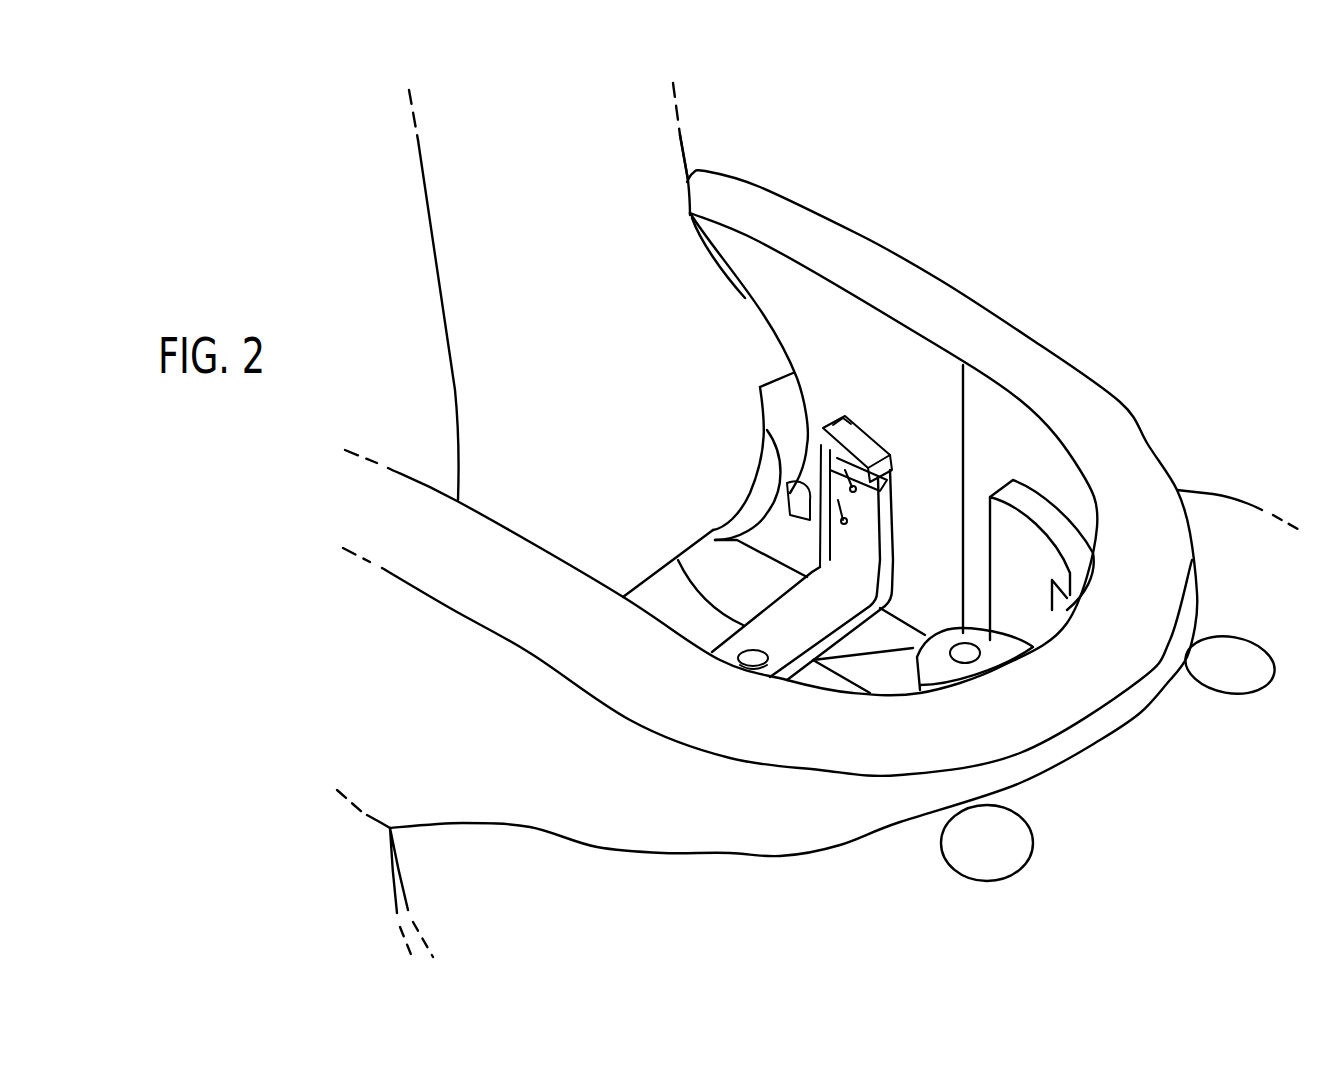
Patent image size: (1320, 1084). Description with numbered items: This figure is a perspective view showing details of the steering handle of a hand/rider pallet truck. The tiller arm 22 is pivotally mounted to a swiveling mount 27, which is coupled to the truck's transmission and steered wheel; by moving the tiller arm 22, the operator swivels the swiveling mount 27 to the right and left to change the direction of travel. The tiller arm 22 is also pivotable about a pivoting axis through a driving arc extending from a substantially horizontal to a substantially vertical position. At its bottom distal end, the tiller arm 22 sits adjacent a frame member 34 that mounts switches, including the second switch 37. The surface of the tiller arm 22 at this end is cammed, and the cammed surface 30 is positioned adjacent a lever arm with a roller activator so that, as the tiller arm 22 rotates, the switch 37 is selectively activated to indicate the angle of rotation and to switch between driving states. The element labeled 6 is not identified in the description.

The tiller arm 22 is at (684, 157).
The cable guide 6 is at (803, 413).
The second switch 37 is at (873, 437).
The frame member 34 is at (900, 545).
The cammed surface 30 is at (770, 520).
The swiveling mount 27 is at (1214, 494).